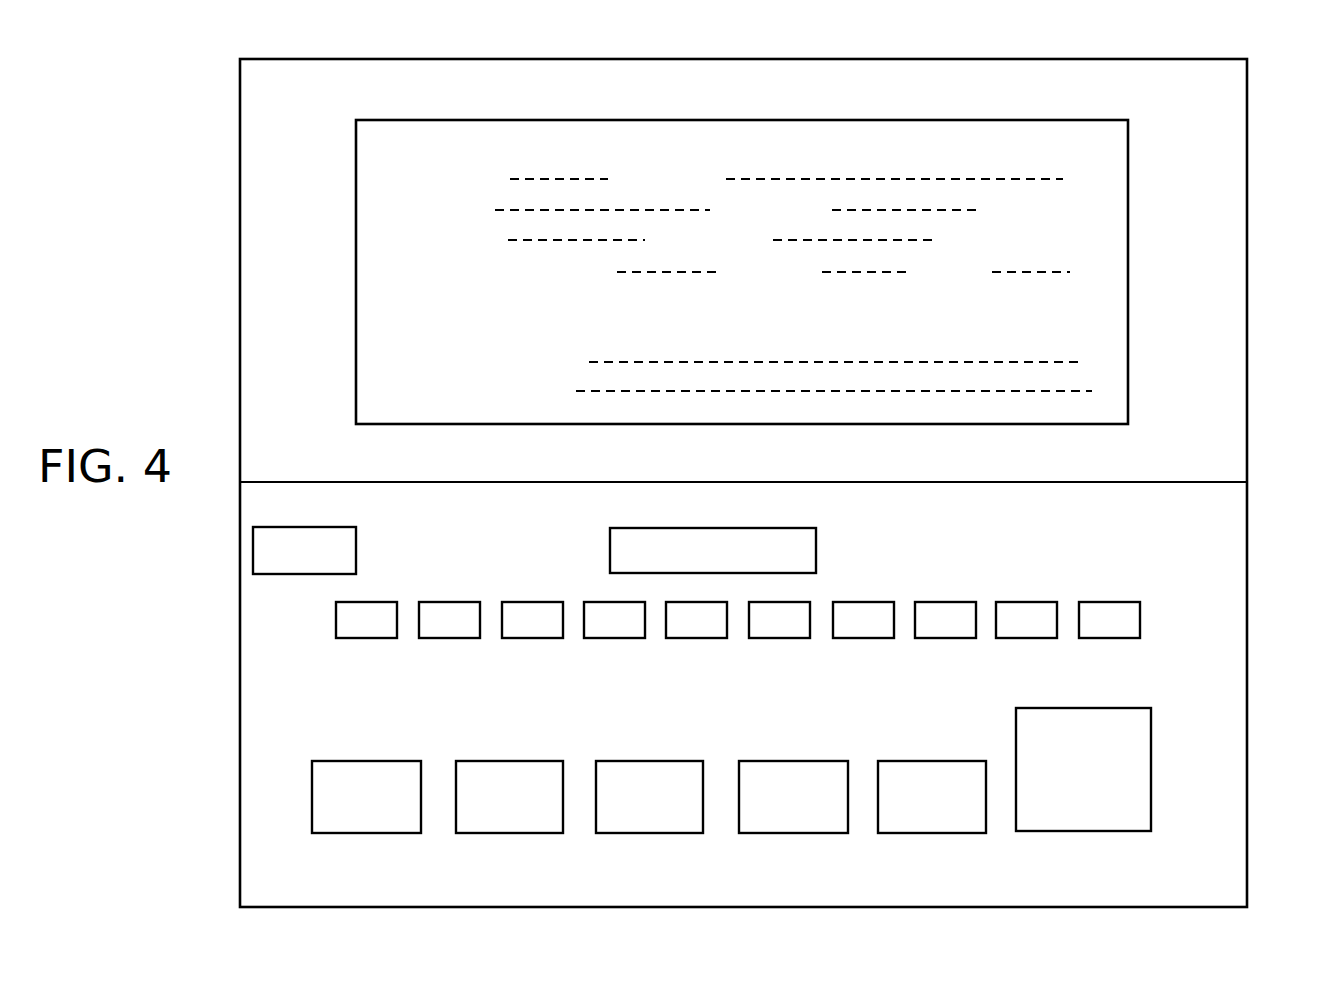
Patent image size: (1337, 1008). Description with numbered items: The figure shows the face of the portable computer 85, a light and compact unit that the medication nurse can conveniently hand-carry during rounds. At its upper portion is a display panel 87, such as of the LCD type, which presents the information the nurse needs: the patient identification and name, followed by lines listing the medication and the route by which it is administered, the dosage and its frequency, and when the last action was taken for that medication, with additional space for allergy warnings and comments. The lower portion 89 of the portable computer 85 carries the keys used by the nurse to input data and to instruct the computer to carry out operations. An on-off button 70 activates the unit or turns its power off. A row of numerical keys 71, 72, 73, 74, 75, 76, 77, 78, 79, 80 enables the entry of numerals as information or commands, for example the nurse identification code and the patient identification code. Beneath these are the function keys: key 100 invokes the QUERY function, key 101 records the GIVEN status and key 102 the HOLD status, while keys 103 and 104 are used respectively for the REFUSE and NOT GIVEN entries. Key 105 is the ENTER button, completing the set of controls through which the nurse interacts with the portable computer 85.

The portable computer 85 is at (1289, 272).
The display panel 87 is at (1232, 433).
The lower portion 89 is at (1233, 618).
The on-off button 70 is at (356, 537).
The numerical key 71 is at (366, 638).
The numerical key 72 is at (449, 638).
The numerical key 73 is at (532, 638).
The numerical key 74 is at (614, 638).
The numerical key 75 is at (696, 638).
The numerical key 76 is at (779, 638).
The numerical key 77 is at (863, 638).
The numerical key 78 is at (945, 638).
The numerical key 79 is at (1026, 638).
The numerical key 80 is at (1109, 638).
The QUERY key 100 is at (383, 761).
The GIVEN key 101 is at (524, 761).
The HOLD key 102 is at (657, 761).
The REFUSE key 103 is at (808, 761).
The NOT GIVEN key 104 is at (949, 761).
The ENTER button 105 is at (1151, 740).